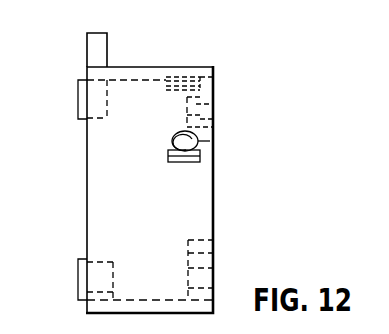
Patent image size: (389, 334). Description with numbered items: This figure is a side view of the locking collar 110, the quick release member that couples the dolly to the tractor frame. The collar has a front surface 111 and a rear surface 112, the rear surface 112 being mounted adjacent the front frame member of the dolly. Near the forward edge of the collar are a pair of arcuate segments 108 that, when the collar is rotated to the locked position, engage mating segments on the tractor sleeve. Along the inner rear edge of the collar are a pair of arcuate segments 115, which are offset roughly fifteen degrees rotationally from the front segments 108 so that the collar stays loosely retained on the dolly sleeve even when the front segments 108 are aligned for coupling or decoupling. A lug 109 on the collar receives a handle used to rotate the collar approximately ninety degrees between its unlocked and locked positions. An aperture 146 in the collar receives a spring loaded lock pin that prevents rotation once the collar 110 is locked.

The arcuate segments 108 is at (105, 113).
The lug 109 is at (93, 33).
The locking collar 110 is at (222, 199).
The front surface 111 is at (86, 189).
The rear surface 112 is at (214, 227).
The arcuate segments 115 is at (205, 103).
The aperture 146 is at (192, 145).